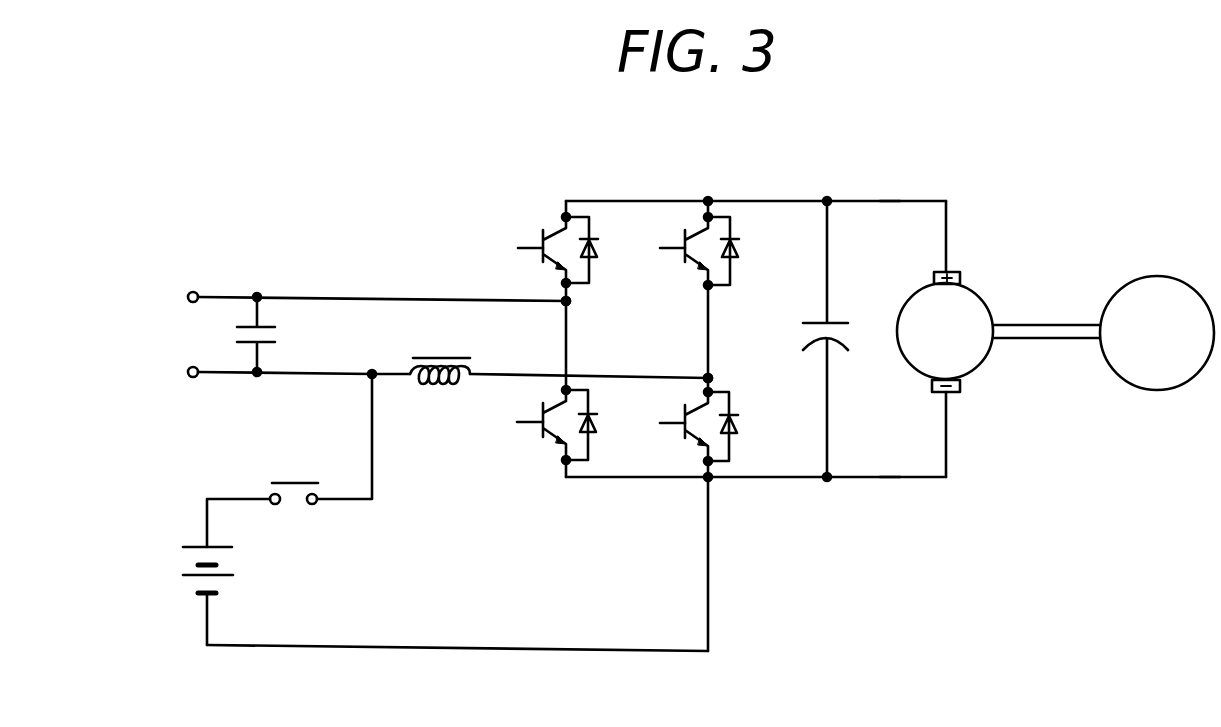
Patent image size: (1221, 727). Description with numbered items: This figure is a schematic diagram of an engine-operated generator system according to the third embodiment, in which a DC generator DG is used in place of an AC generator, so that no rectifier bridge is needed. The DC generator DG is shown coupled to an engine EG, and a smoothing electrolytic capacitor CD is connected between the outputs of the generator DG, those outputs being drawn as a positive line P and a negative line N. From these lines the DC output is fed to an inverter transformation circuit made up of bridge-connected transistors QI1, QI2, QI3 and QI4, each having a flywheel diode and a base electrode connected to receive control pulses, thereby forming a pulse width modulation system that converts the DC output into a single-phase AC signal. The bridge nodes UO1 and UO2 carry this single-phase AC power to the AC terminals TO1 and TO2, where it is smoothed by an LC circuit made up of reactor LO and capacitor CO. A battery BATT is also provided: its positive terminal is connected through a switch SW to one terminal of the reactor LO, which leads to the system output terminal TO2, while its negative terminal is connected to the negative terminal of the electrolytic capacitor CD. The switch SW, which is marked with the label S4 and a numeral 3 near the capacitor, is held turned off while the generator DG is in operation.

The AC terminal TO1 is at (350, 296).
The system output terminal TO2 is at (421, 371).
The bridge output node 1 UO1 is at (534, 287).
The bridge output node 2 UO2 is at (679, 365).
The capacitor CO is at (275, 334).
The reactor LO is at (440, 355).
The switch SW is at (289, 460).
The switch control signal S4 is at (300, 476).
The battery BATT is at (170, 596).
The transistor QI1 is at (576, 227).
The transistor QI2 is at (571, 450).
The transistor QI3 is at (723, 228).
The transistor QI4 is at (719, 451).
The electrolytic capacitor CD is at (826, 339).
The capacitor 3 is at (853, 332).
The positive DC bus P is at (890, 201).
The negative DC bus N is at (890, 478).
The DC generator DG is at (945, 339).
The engine EG is at (1103, 333).